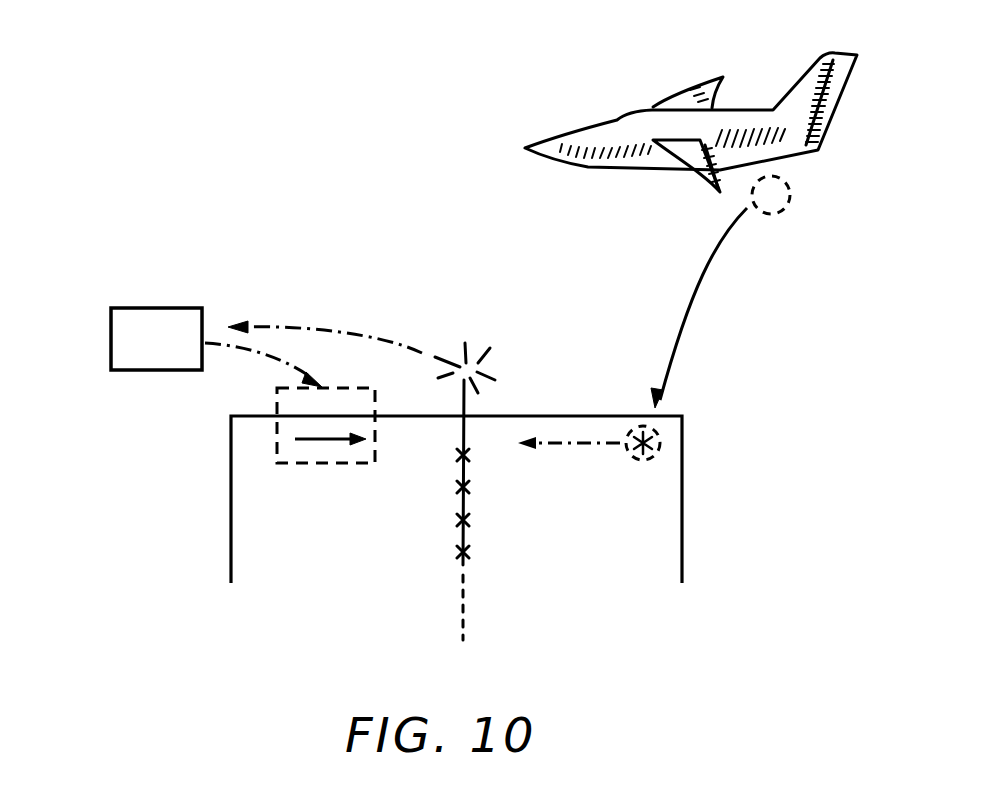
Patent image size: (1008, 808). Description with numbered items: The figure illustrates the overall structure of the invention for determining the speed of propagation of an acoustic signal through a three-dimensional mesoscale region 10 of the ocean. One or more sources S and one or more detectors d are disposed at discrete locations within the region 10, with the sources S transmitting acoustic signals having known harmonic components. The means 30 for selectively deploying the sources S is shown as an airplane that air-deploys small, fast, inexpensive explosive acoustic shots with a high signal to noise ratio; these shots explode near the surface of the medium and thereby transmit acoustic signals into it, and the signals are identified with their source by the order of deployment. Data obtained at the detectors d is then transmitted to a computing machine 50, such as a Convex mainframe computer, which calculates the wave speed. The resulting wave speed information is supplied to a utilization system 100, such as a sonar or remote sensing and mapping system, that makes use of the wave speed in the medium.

The mesoscale region 10 is at (263, 503).
The means for selectively deploying the sources 30 is at (826, 120).
The computing machine 50 is at (120, 340).
The utilization system 100 is at (280, 398).
The detector d is at (458, 520).
The source S is at (648, 447).